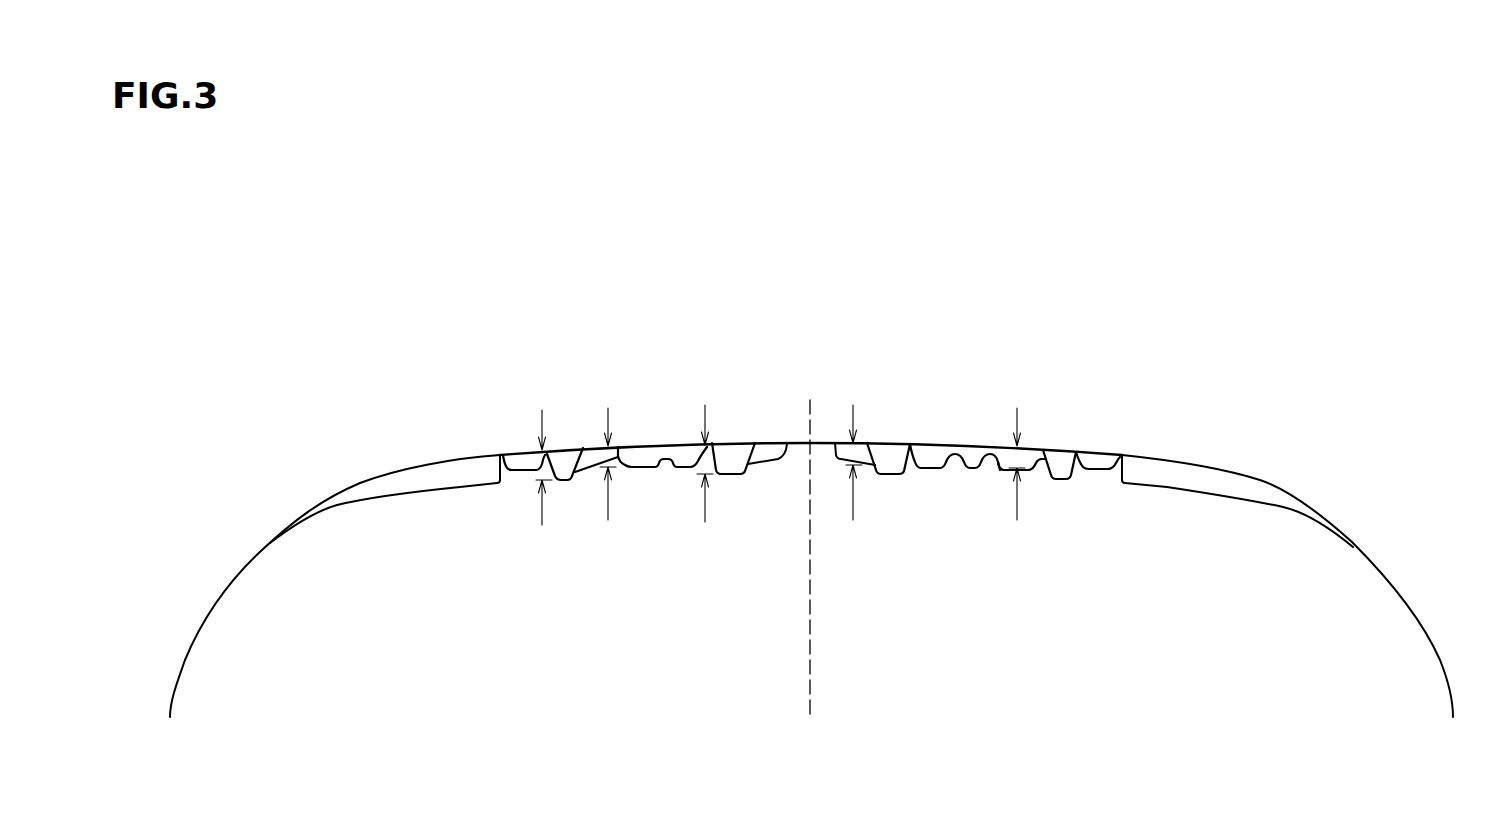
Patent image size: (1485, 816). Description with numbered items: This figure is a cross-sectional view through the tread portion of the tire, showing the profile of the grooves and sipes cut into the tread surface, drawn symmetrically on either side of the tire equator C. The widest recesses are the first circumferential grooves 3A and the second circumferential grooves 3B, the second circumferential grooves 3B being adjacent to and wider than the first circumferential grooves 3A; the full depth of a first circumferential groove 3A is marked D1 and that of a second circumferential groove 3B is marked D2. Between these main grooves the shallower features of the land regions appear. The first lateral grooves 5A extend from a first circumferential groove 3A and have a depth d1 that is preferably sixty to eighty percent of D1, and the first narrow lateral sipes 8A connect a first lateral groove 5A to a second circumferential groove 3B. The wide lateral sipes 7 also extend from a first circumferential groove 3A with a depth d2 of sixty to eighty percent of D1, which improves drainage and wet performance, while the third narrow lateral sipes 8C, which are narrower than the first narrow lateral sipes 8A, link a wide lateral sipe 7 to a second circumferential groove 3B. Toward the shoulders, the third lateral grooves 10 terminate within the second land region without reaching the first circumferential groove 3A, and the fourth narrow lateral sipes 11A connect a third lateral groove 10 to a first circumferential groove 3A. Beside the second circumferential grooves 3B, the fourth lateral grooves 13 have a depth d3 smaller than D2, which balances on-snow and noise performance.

The third lateral groove 10 is at (428, 476).
The fourth narrow lateral sipe 11A is at (521, 458).
The first circumferential groove 3A is at (568, 462).
The second circumferential groove 3B is at (741, 465).
The first lateral groove 5A is at (592, 458).
The first narrow lateral sipe 8A is at (661, 462).
The fourth lateral groove 13 is at (771, 456).
The third narrow lateral sipe 8C is at (923, 455).
The wide lateral sipe 7 is at (999, 456).
The tire equator C is at (811, 543).
The depth of first circumferential groove D1 is at (548, 458).
The depth of first lateral groove d1 is at (600, 460).
The depth of second circumferential groove D2 is at (710, 455).
The depth of fourth lateral groove d3 is at (858, 455).
The depth of wide lateral sipe d2 is at (1018, 456).